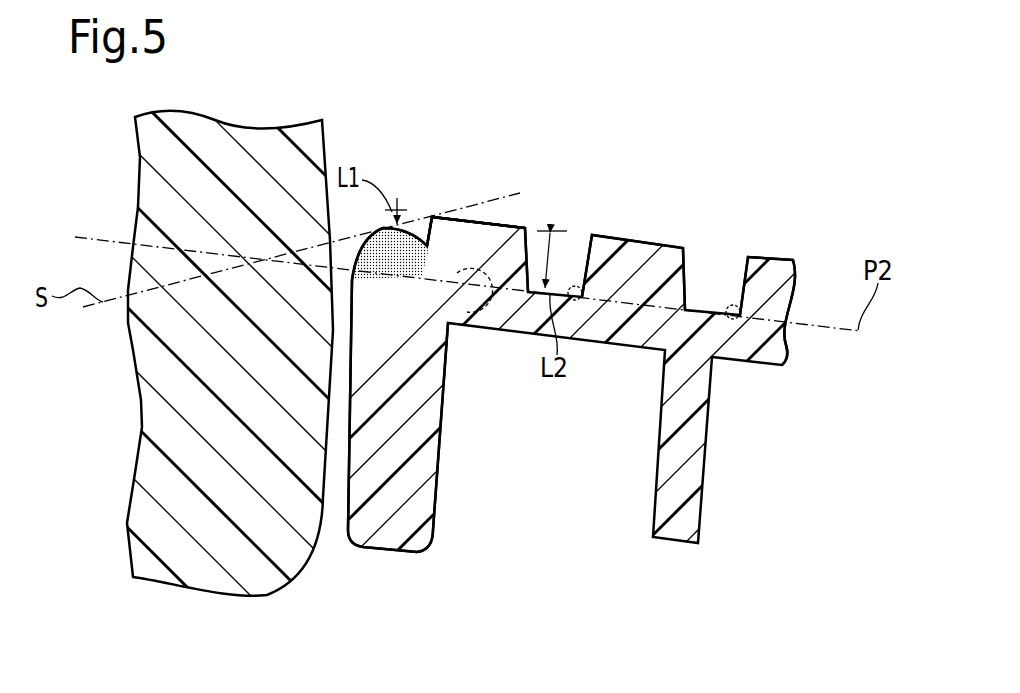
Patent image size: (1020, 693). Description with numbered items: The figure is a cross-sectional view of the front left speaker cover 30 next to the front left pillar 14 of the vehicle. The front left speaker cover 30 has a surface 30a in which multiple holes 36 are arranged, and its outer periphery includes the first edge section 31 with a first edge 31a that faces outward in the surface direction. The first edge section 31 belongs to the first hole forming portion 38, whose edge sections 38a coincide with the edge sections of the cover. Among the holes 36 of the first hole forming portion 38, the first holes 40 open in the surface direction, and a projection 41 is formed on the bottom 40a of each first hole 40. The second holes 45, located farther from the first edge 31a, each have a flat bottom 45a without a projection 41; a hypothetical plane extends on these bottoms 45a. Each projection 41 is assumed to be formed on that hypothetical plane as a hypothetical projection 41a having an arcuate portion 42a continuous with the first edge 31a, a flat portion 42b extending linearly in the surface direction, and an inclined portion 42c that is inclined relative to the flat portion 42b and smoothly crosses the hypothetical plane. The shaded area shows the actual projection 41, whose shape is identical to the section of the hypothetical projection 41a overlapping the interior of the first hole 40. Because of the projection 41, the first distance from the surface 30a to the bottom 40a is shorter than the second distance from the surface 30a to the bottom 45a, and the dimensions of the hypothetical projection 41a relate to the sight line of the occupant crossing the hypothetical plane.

The front left pillar 14 is at (190, 123).
The front left speaker cover 30 is at (836, 137).
The surface 30a is at (789, 258).
The first edge section 31 is at (347, 467).
The first edge 31a is at (390, 564).
The holes 36 is at (745, 280).
The first hole forming portion 38 is at (794, 221).
The edge sections 38a is at (448, 461).
The first holes 40 is at (432, 215).
The bottom 40a is at (385, 187).
The projections 41 is at (433, 240).
The hypothetical projection 41a is at (514, 193).
The arcuate portion 42a is at (357, 255).
The flat portion 42b is at (409, 228).
The inclined portion 42c is at (470, 315).
The second holes 45 is at (711, 252).
The bottom 45a is at (578, 300).